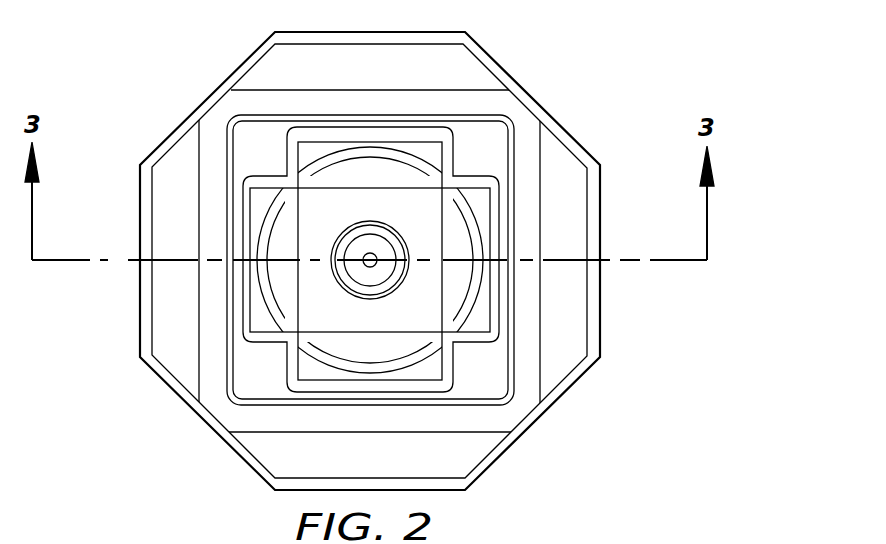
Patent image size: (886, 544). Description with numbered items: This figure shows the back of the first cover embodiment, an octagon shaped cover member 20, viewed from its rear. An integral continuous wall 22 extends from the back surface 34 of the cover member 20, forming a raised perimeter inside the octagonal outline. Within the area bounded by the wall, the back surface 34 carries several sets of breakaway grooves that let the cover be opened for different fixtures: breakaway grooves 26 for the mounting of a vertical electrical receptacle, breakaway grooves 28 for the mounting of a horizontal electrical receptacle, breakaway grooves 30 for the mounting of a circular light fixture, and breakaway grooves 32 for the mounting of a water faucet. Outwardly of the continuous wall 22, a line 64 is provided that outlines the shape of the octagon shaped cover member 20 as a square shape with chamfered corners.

The cover member 20 is at (574, 31).
The continuous wall 22 is at (520, 123).
The breakaway grooves 26 is at (293, 142).
The breakaway grooves 28 is at (243, 225).
The breakaway grooves 30 is at (478, 308).
The breakaway grooves 32 is at (403, 244).
The back surface 34 is at (496, 160).
The line 64 is at (540, 362).